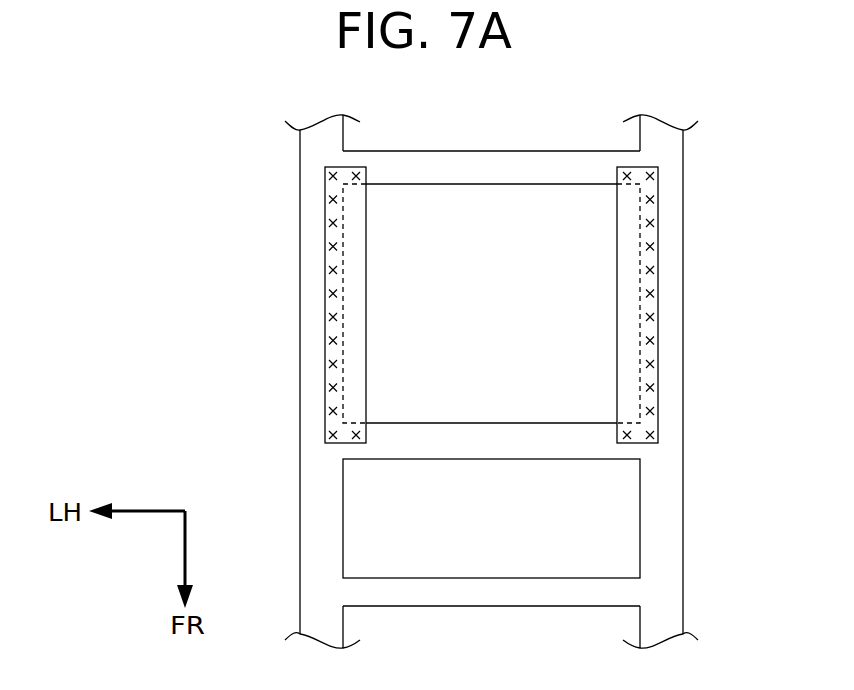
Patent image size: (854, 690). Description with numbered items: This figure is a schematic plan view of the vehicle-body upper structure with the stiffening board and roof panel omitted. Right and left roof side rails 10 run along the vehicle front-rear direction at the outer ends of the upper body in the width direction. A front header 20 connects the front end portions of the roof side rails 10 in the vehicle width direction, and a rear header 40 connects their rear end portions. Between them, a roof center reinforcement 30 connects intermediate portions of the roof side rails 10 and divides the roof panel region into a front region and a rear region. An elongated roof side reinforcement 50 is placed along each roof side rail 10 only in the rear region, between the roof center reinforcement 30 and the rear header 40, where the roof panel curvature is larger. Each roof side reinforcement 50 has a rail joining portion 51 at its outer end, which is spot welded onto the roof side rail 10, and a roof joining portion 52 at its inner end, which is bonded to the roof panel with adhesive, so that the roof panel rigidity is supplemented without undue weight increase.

The roof side rail 10 is at (308, 420).
The front header 20 is at (484, 596).
The roof center reinforcement 30 is at (484, 448).
The rear header 40 is at (485, 167).
The roof side reinforcement 50 is at (320, 254).
The rail joining portion 51 is at (330, 329).
The roof joining portion 52 is at (363, 304).